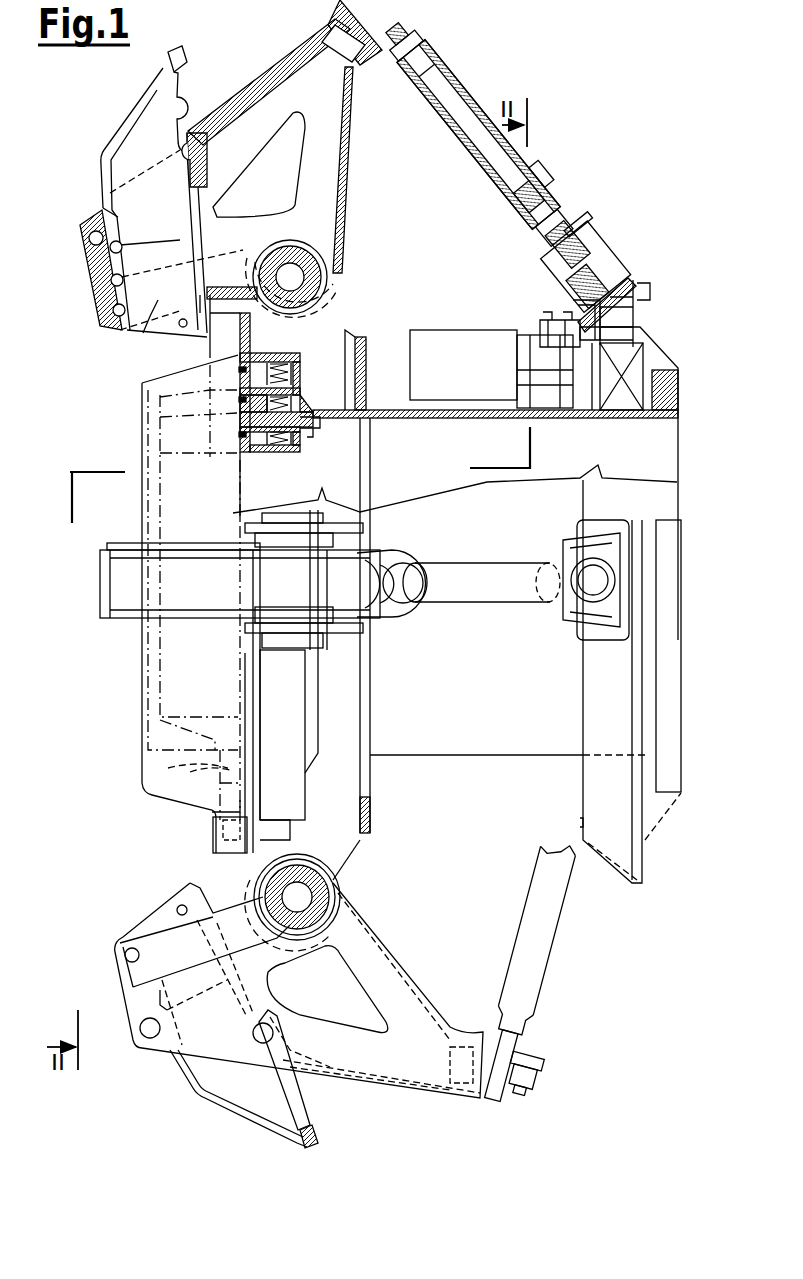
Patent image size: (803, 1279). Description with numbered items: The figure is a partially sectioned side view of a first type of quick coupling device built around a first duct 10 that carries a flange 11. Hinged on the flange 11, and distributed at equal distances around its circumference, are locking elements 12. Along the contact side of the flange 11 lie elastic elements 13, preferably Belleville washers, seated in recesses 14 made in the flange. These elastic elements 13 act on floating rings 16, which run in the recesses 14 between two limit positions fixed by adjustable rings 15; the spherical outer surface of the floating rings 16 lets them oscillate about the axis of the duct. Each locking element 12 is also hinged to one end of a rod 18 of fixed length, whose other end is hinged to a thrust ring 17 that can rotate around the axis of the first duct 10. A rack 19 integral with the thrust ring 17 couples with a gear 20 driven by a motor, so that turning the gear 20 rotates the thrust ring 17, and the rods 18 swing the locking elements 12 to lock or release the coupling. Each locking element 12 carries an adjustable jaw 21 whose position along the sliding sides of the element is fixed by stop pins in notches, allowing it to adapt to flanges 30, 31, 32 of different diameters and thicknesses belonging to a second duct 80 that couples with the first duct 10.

The first duct 10 is at (478, 732).
The flange 11 is at (293, 797).
The locking element 12 is at (267, 100).
The elastic element 13 is at (300, 393).
The recess 14 is at (280, 357).
The adjustable ring 15 is at (243, 378).
The floating ring 16 is at (242, 369).
The thrust ring 17 is at (622, 288).
The rod 18 is at (470, 93).
The rack 19 is at (563, 327).
The gear 20 is at (555, 358).
The adjustable jaw 21 is at (157, 307).
The flange of second duct 30 is at (230, 848).
The flange of second duct 31 is at (212, 815).
The flange of second duct 32 is at (228, 766).
The second duct 80 is at (140, 716).